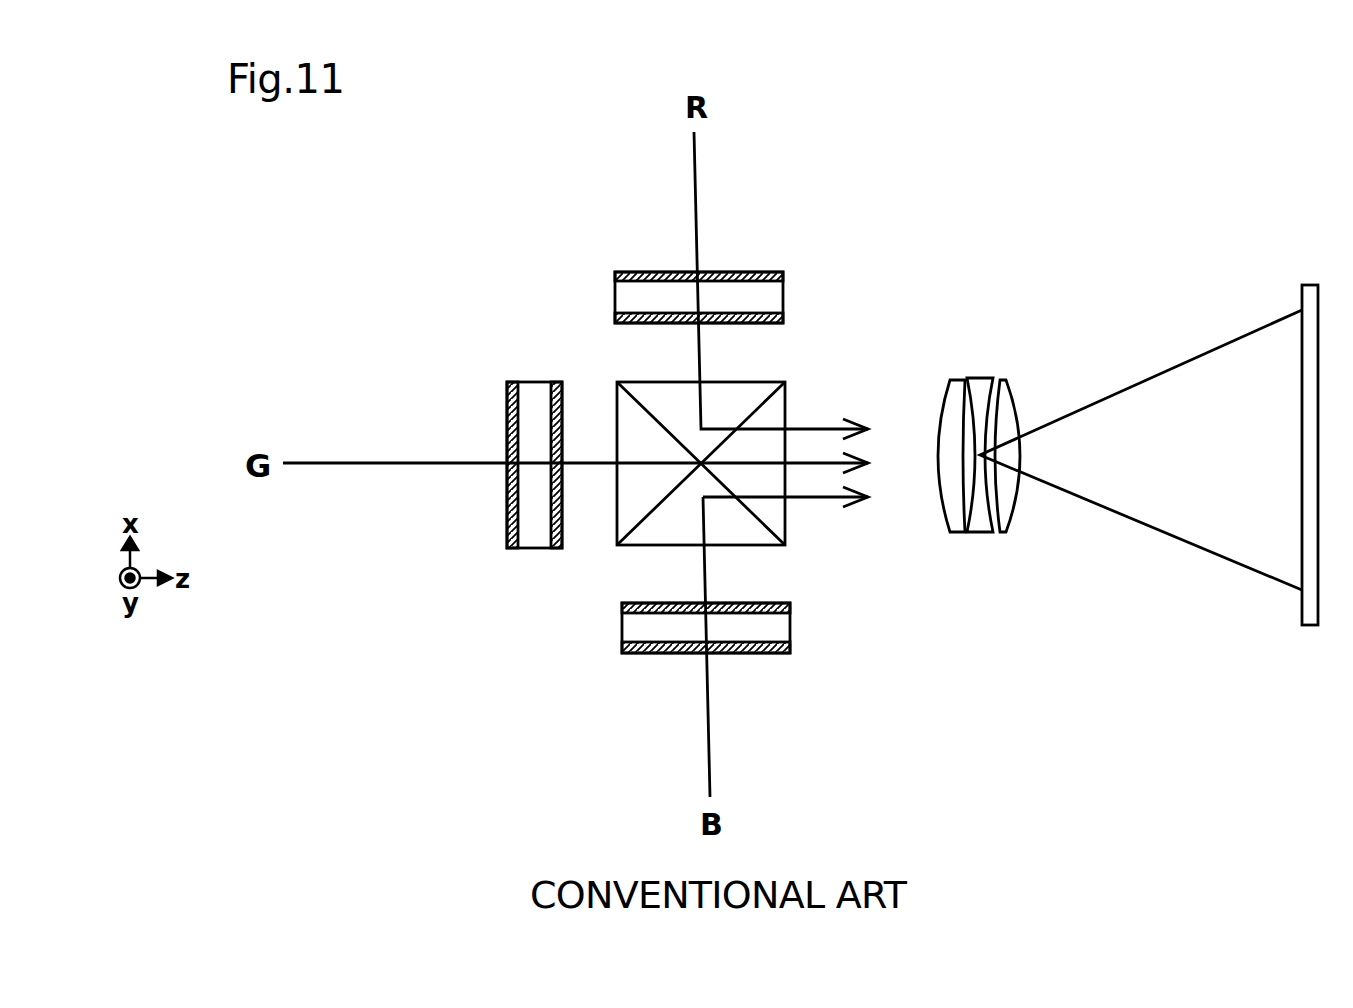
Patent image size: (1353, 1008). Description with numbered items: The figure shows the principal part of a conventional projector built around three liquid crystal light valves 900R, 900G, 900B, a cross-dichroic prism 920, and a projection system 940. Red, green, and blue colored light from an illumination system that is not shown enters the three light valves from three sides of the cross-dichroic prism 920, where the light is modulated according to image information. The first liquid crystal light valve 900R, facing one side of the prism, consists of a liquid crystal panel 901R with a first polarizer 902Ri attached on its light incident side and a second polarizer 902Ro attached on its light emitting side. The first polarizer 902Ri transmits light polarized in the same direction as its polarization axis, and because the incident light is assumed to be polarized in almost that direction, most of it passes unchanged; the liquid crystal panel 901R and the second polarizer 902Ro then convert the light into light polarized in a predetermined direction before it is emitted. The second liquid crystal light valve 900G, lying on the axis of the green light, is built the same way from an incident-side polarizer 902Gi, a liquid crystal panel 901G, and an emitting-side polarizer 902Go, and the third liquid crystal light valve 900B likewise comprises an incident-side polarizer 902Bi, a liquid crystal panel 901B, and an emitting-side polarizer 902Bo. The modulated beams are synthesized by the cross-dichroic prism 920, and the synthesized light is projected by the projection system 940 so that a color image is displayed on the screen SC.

The cross-dichroic prism 920 is at (785, 413).
The first liquid crystal light valve 900R is at (830, 296).
The first polarizer 902Ri is at (783, 275).
The liquid crystal panel 901R is at (783, 297).
The second polarizer 902Ro is at (783, 320).
The third liquid crystal light valve 900B is at (837, 625).
The polarizer 902Bo is at (790, 605).
The liquid crystal panel 901B is at (790, 628).
The polarizer 902Bi is at (790, 650).
The second liquid crystal light valve 900G is at (424, 531).
The polarizer 902Gi is at (518, 548).
The liquid crystal panel 901G is at (538, 548).
The polarizer 902Go is at (560, 548).
The projection system 940 is at (983, 377).
The screen SC is at (1308, 285).